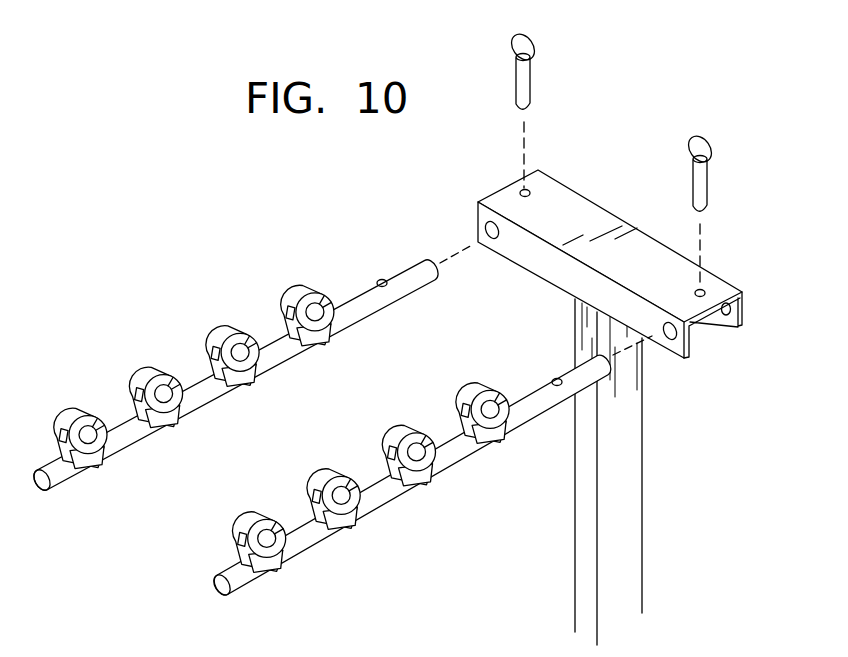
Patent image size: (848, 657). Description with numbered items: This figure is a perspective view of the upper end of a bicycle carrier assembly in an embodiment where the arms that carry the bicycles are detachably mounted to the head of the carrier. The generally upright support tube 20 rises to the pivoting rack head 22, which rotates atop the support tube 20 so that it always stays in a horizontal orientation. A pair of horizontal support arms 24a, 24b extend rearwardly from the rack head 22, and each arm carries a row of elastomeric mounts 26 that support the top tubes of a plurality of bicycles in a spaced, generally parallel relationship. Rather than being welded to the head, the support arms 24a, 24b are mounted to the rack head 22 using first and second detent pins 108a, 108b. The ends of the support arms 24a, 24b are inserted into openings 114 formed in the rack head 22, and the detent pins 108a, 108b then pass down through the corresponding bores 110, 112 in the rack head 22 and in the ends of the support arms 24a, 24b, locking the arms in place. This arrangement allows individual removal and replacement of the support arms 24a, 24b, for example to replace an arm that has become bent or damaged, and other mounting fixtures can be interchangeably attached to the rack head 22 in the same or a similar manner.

The support tube 20 is at (630, 462).
The rack head 22 is at (583, 215).
The support arm 24a is at (63, 478).
The support arm 24b is at (235, 572).
The elastomeric mounts 26 is at (217, 337).
The first detent pin 108a is at (530, 78).
The second detent pin 108b is at (703, 183).
The bore 110 is at (527, 193).
The bore 112 is at (378, 279).
The openings 114 is at (482, 233).